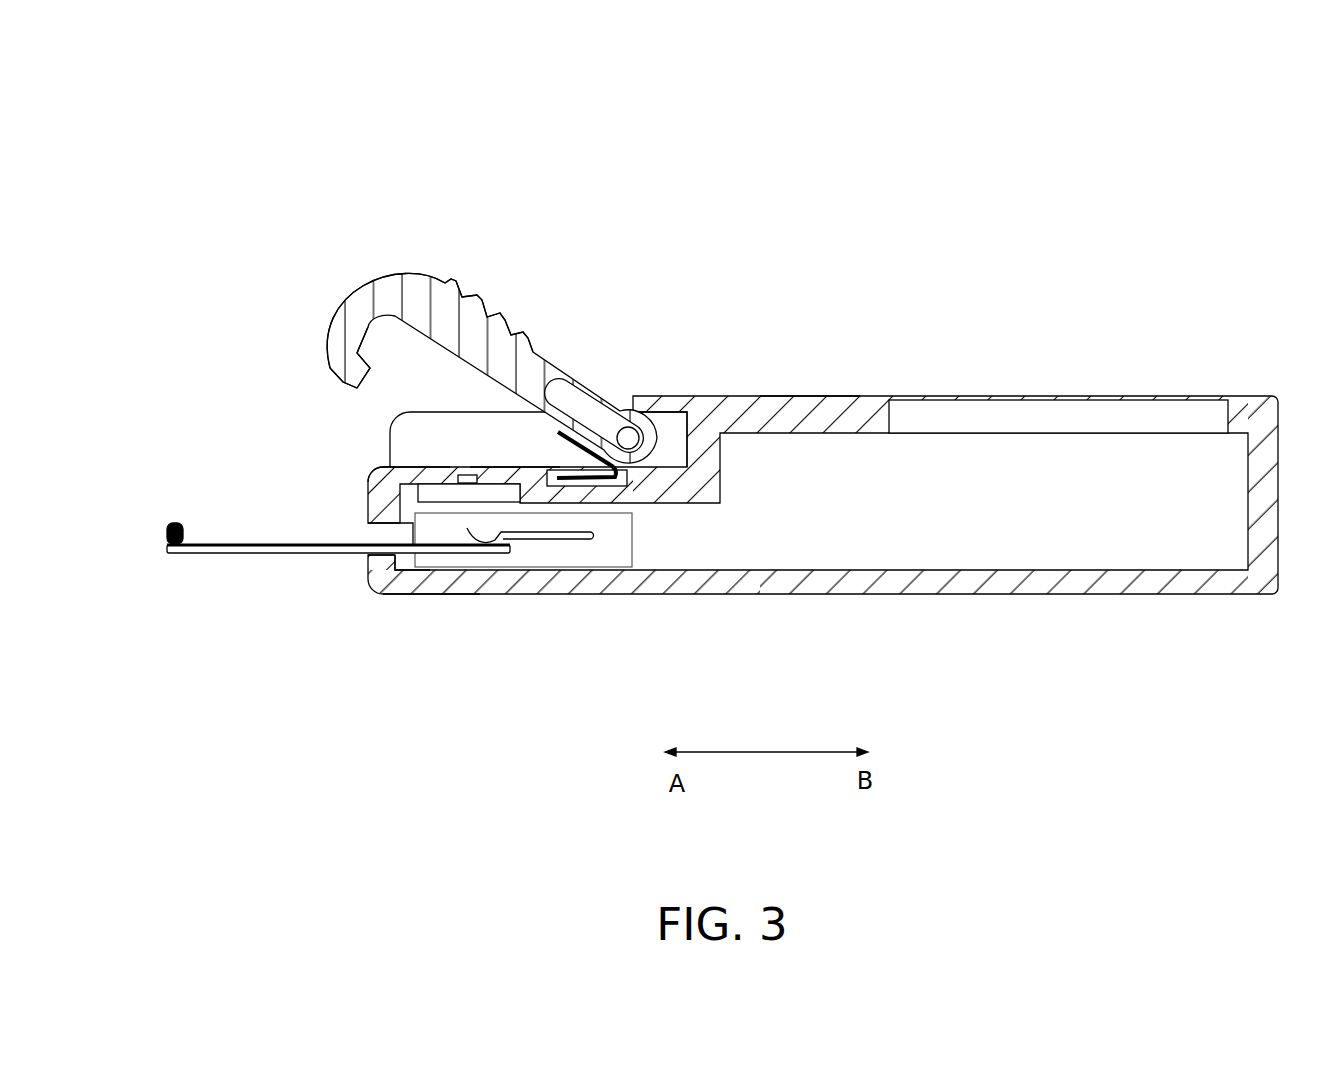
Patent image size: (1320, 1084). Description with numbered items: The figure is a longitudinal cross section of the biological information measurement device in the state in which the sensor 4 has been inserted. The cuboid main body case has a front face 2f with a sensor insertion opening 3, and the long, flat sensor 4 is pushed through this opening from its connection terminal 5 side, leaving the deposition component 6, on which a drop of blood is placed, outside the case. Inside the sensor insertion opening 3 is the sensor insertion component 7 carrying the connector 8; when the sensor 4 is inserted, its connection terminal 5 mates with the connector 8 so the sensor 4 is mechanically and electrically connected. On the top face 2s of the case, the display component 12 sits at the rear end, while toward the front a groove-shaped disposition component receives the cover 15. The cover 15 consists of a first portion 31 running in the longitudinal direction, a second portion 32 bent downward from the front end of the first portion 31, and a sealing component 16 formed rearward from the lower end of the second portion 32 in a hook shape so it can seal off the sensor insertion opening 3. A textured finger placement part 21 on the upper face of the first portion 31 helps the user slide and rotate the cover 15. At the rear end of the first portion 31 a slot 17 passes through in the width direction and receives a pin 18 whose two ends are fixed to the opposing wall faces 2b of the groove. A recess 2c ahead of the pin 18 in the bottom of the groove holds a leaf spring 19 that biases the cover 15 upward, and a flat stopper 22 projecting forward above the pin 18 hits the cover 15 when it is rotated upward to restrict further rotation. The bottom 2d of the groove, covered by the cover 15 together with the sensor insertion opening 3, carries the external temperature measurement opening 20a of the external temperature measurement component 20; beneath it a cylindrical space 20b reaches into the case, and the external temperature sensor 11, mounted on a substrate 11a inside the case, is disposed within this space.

The wall faces 2b is at (457, 430).
The recess 2c is at (627, 486).
The bottom of the disposition component 2d is at (508, 467).
The front face 2f is at (367, 553).
The top face 2s is at (797, 396).
The sensor insertion opening 3 is at (368, 535).
The sensor 4 is at (322, 552).
The connection terminal 5 is at (480, 495).
The deposition component 6 is at (187, 553).
The sensor insertion component 7 is at (585, 558).
The connector 8 is at (553, 537).
The external temperature sensor 11 is at (398, 575).
The substrate 11a is at (465, 487).
The display component 12 is at (1043, 412).
The cover 15 is at (392, 285).
The sealing component 16 is at (353, 372).
The slot 17 is at (568, 386).
The pin 18 is at (628, 436).
The leaf spring 19 is at (597, 485).
The external temperature measurement component 20 is at (467, 467).
The external temperature measurement opening 20a is at (443, 467).
The cylindrical space 20b is at (400, 557).
The finger placement part 21 is at (476, 335).
The stopper 22 is at (655, 395).
The first portion 31 is at (497, 352).
The second portion 32 is at (347, 316).